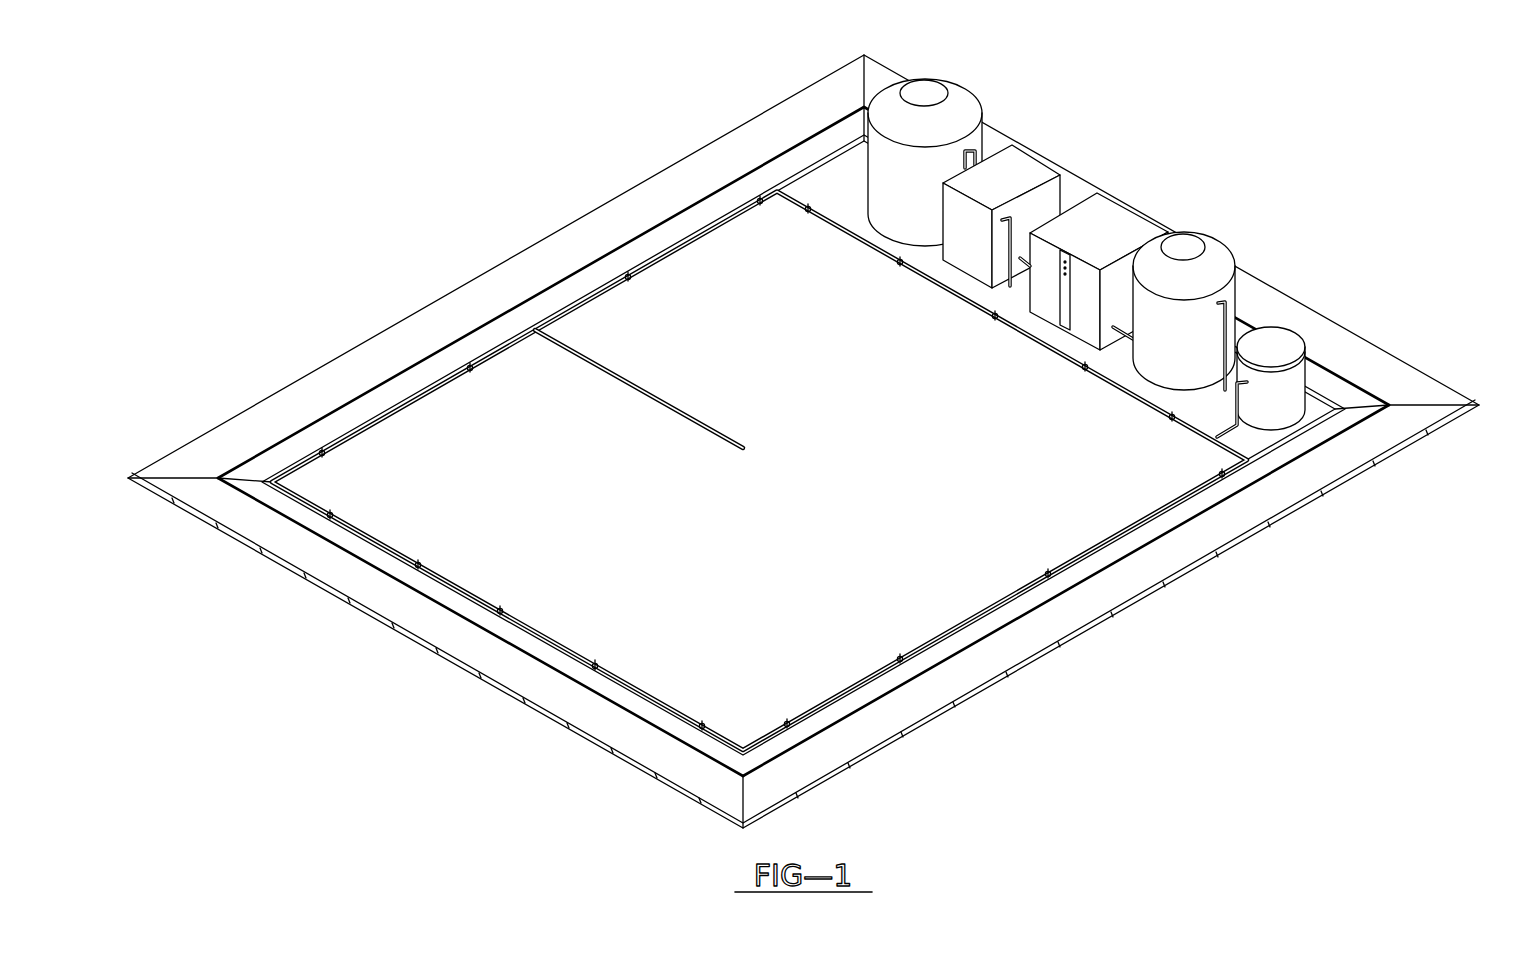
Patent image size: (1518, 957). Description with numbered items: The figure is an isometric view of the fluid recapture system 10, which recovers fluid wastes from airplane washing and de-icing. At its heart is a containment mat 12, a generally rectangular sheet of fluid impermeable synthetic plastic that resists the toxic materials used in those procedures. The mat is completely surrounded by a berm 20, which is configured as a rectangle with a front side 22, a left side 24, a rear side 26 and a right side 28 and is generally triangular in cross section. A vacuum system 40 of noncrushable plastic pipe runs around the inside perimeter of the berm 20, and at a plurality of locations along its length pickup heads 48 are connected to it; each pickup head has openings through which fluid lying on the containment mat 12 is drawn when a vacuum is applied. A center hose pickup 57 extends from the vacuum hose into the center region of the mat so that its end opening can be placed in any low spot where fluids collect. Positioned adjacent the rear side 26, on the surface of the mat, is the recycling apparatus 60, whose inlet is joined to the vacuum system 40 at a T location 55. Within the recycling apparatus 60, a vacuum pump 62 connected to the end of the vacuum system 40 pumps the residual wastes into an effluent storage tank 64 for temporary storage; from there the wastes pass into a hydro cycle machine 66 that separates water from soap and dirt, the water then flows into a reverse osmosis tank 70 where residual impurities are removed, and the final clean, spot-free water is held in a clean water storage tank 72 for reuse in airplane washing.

The fluid recapture system 10 is at (406, 240).
The containment mat 12 is at (765, 498).
The berm 20 is at (566, 766).
The front side 22 is at (428, 632).
The left side 24 is at (332, 375).
The rear side 26 is at (1370, 370).
The right side 28 is at (1130, 580).
The vacuum system 40 is at (683, 250).
The pickup heads 48 is at (327, 453).
The T location 55 is at (1238, 412).
The center hose pickup 57 is at (700, 427).
The recycling apparatus 60 is at (1113, 266).
The vacuum pump 62 is at (1282, 342).
The effluent storage tank 64 is at (1218, 257).
The hydro cycle machine 66 is at (1115, 218).
The reverse osmosis tank 70 is at (1032, 160).
The clean water storage tank 72 is at (948, 122).